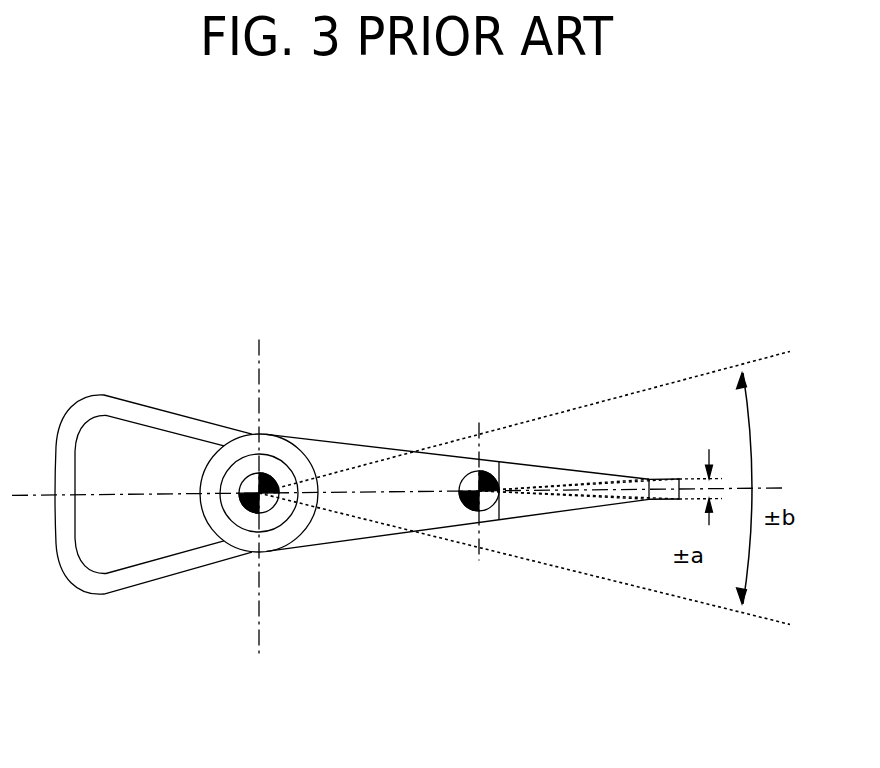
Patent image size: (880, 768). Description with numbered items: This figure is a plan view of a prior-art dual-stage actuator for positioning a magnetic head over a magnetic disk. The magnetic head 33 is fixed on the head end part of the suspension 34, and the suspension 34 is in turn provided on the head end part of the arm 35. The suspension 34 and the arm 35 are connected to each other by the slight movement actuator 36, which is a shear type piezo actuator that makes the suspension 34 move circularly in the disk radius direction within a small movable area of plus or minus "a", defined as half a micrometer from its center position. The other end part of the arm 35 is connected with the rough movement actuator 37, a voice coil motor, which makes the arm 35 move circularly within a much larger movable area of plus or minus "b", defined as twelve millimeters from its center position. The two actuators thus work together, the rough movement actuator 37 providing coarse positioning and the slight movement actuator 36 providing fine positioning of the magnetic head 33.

The magnetic head 33 is at (662, 480).
The suspension 34 is at (570, 467).
The arm 35 is at (364, 446).
The slight movement actuator 36 is at (470, 510).
The rough movement actuator 37 is at (148, 582).